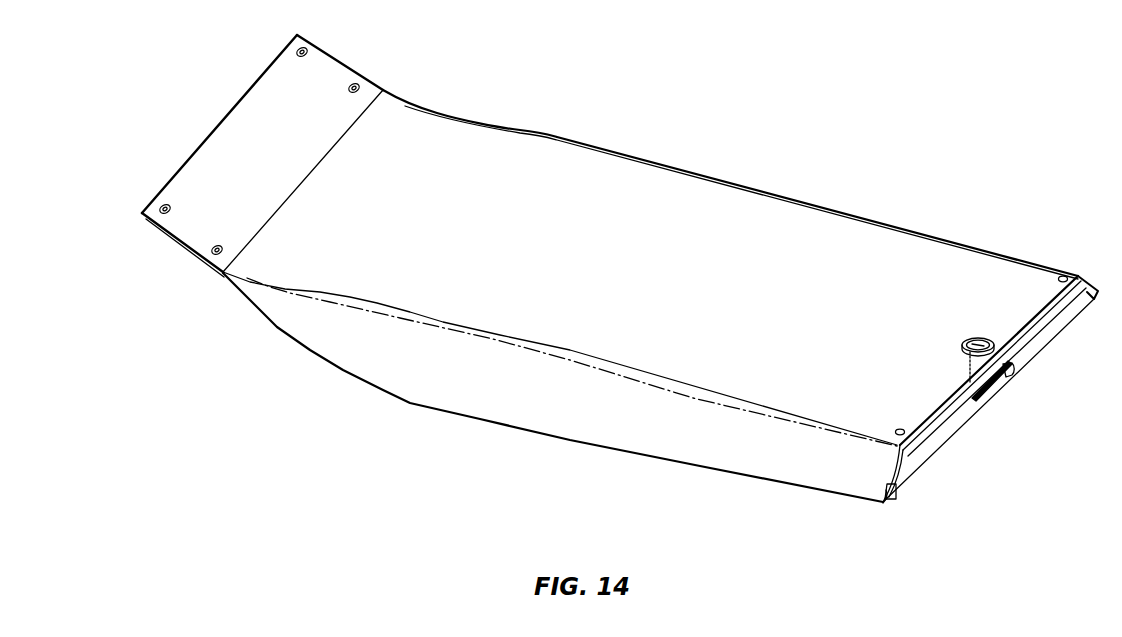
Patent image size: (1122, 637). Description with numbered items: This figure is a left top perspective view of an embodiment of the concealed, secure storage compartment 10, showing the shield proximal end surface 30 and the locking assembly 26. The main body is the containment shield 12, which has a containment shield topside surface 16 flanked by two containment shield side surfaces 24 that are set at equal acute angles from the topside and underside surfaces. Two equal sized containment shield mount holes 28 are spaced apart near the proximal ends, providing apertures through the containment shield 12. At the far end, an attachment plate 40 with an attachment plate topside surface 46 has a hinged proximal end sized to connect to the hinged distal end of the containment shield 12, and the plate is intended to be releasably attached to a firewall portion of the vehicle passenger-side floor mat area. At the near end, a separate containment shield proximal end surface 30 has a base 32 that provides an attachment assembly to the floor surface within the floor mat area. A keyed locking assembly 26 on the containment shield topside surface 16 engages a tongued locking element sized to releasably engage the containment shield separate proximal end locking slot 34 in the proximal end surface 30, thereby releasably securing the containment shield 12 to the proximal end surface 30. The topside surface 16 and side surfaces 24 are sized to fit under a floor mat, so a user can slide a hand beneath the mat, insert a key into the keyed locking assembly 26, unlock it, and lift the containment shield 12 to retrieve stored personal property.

The concealed, secure storage compartment 10 is at (923, 100).
The containment shield 12 is at (622, 146).
The containment shield topside surface 16 is at (613, 263).
The containment shield side surface 24 is at (618, 419).
The keyed locking assembly 26 is at (970, 338).
The containment shield mount holes 28 is at (1061, 275).
The containment shield proximal end surface 30 is at (950, 430).
The base 32 is at (882, 504).
The containment shield separate proximal end locking slot 34 is at (985, 391).
The attachment plate 40 is at (262, 156).
The attachment plate topside surface 46 is at (272, 168).